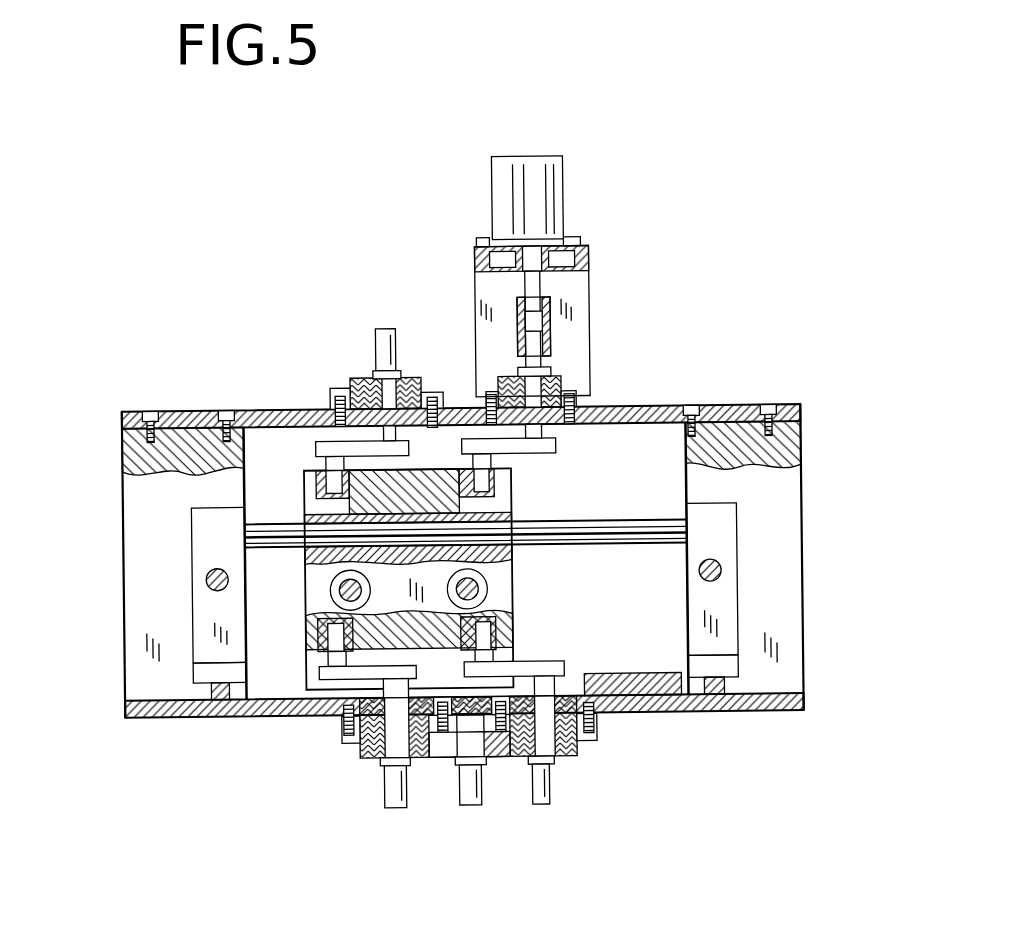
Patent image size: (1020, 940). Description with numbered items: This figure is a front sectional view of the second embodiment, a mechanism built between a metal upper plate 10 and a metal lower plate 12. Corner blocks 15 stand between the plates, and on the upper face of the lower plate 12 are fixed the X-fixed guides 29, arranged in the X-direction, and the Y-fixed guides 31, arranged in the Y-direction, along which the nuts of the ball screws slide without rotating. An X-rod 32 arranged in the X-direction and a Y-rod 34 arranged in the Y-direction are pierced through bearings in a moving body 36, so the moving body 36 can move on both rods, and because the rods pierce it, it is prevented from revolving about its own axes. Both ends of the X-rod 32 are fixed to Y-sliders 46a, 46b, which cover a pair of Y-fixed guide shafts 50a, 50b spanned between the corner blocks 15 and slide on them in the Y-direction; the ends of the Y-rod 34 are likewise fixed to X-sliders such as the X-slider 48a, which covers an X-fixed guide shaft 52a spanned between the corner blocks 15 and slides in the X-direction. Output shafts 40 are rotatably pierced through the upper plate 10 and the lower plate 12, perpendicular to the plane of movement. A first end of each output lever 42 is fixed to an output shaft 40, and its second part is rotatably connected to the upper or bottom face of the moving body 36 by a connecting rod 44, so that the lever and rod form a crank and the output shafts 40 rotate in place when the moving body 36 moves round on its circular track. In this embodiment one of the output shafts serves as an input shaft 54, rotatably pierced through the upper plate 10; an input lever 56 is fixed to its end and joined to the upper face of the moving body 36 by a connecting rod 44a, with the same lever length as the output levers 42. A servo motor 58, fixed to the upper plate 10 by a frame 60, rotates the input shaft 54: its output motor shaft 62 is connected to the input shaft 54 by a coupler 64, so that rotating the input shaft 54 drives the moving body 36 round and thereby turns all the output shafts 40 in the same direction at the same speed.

The upper plate 10 is at (173, 412).
The lower plate 12 is at (787, 715).
The corner blocks 15 is at (160, 562).
The X-fixed guides 29 is at (655, 695).
The Y-fixed guides 31 is at (318, 673).
The X-rod 32 is at (650, 523).
The Y-rod 34 is at (332, 595).
The moving body 36 is at (292, 487).
The output shafts 40 is at (383, 327).
The output lever 42 is at (325, 497).
The connecting rod 44 is at (327, 463).
The connecting rod 44a is at (570, 527).
The Y-slider 46a is at (715, 537).
The Y-slider 46b is at (217, 530).
The X-slider 48a is at (680, 697).
The Y-fixed guide shaft 50a is at (718, 583).
The Y-fixed guide shaft 50b is at (208, 590).
The X-fixed guide shaft 52a is at (648, 522).
The input shaft 54 is at (555, 337).
The input lever 56 is at (492, 462).
The servo motor 58 is at (555, 173).
The frame 60 is at (590, 280).
The output motor shaft 62 is at (475, 297).
The coupler 64 is at (555, 308).